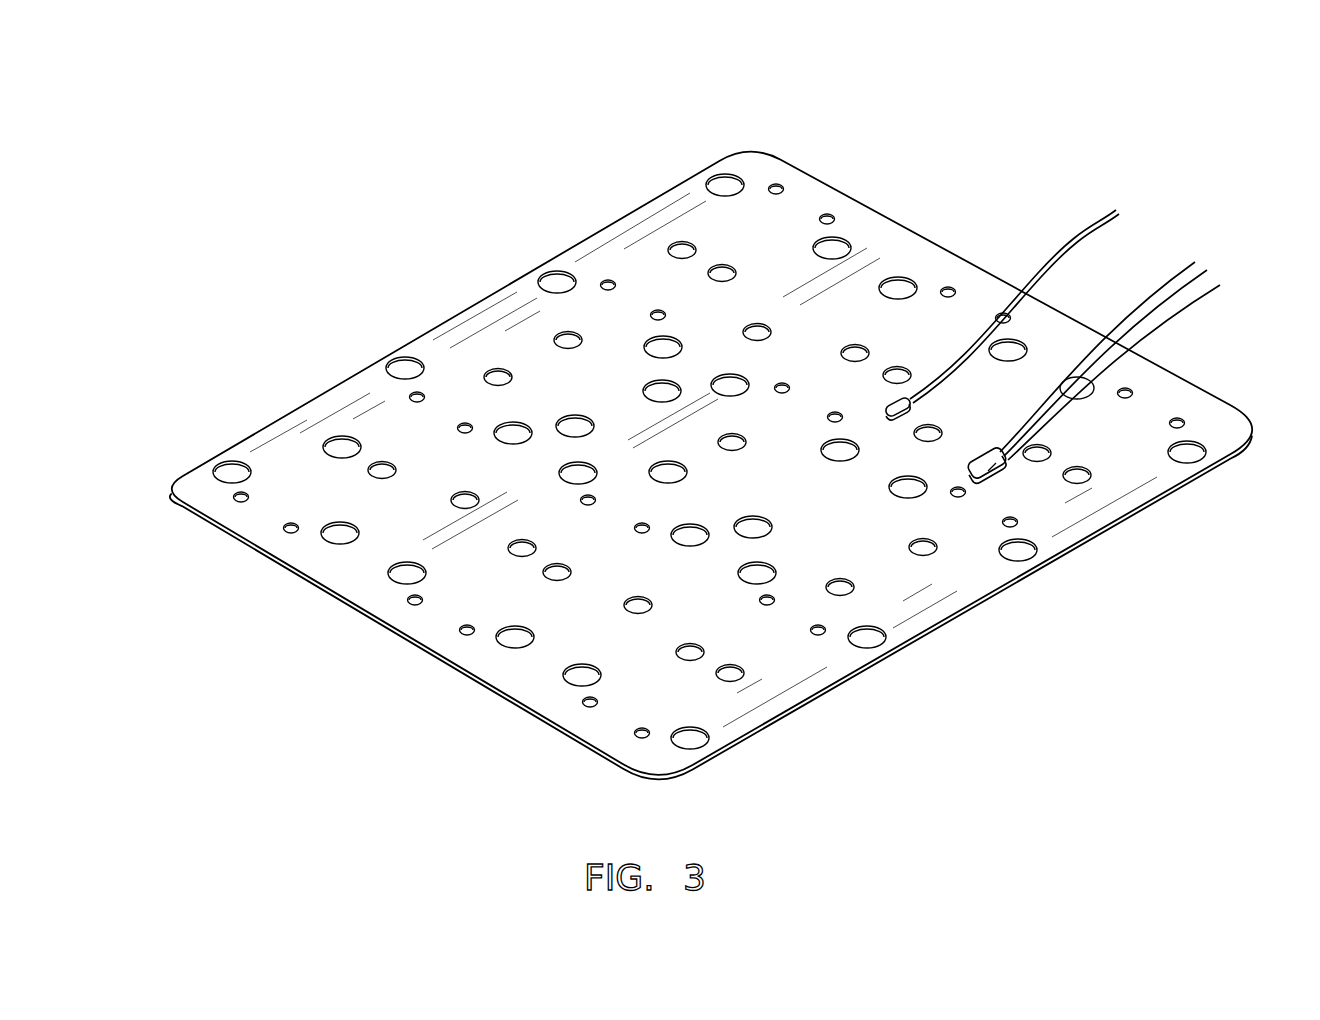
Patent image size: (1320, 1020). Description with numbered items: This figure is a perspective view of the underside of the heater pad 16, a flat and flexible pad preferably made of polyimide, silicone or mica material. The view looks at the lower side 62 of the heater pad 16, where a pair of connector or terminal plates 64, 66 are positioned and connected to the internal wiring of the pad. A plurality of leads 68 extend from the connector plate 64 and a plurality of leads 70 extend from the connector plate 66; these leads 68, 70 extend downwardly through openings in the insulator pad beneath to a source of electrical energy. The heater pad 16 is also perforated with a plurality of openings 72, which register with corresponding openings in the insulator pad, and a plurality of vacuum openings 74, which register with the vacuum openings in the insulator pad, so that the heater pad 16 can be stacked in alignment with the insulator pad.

The heater pad 16 is at (546, 221).
The lower side 62 is at (578, 386).
The connector plate 64 is at (987, 487).
The connector plate 66 is at (893, 404).
The leads 68 is at (1173, 300).
The leads 70 is at (1074, 242).
The openings 72 is at (733, 183).
The vacuum openings 74 is at (733, 675).